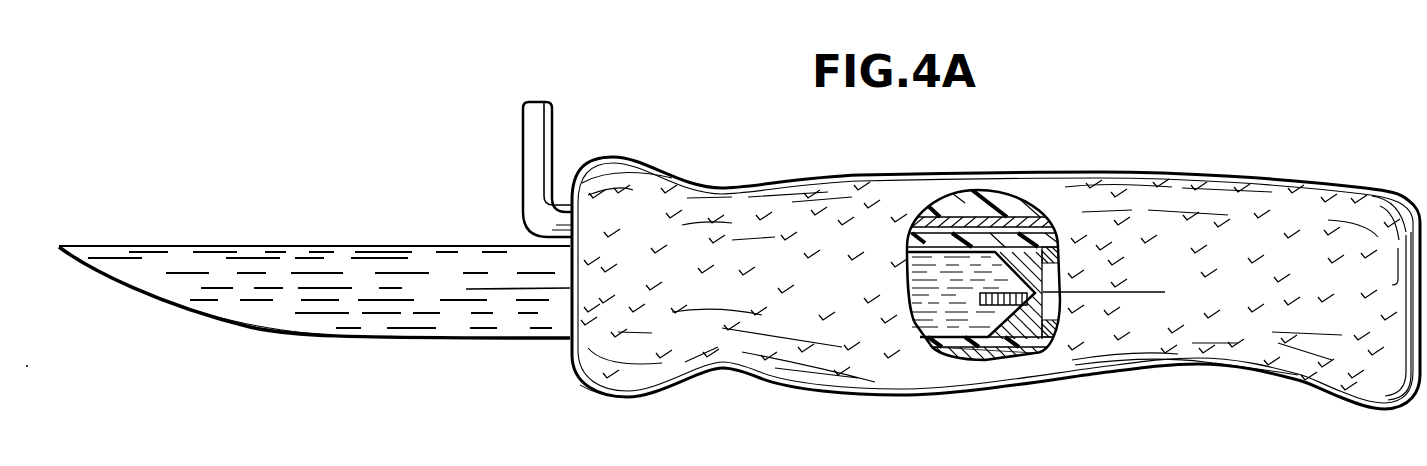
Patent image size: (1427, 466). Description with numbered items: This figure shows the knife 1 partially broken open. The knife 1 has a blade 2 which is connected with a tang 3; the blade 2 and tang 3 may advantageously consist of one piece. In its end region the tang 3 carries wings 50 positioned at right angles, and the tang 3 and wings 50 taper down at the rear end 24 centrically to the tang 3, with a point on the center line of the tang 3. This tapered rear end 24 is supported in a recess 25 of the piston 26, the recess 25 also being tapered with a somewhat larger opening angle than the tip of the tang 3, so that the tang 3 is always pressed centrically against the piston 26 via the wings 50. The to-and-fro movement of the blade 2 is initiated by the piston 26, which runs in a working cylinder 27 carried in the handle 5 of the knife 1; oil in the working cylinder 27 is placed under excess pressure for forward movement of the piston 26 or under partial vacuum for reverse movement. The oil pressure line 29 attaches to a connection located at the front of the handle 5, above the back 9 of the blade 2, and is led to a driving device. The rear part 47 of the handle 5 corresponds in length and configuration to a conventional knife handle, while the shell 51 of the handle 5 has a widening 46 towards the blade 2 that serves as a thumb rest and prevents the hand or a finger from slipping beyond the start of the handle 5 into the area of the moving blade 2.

The knife 1 is at (679, 155).
The blade 2 is at (238, 258).
The back of the blade 9 is at (340, 248).
The oil pressure line 29 is at (524, 160).
The handle 5 is at (768, 185).
The tang 3 is at (929, 258).
The wings 50 is at (912, 292).
The piston 26 is at (1012, 275).
The recess 25 is at (1022, 322).
The rear end 24 is at (977, 342).
The working cylinder 27 is at (1052, 332).
The shell 51 is at (1095, 172).
The rear part 47 is at (1408, 190).
The widening 46 is at (613, 399).